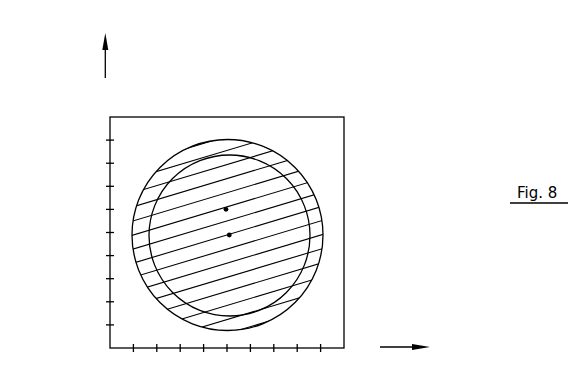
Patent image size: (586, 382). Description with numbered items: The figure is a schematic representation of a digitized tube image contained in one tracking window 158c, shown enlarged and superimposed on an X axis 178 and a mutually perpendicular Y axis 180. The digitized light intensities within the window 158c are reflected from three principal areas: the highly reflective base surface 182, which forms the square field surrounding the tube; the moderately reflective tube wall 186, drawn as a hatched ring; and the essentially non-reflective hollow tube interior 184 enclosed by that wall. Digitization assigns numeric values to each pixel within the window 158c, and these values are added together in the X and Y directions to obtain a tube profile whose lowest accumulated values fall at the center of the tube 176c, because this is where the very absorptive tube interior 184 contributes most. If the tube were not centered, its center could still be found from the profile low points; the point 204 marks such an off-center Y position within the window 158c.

The window 158c is at (315, 116).
The base surface 182 is at (142, 132).
The tube wall 186 is at (283, 170).
The hollow tube interior 184 is at (260, 278).
The tube 176c is at (231, 234).
The point 204 is at (224, 210).
The Y axis 180 is at (103, 60).
The X axis 178 is at (395, 348).